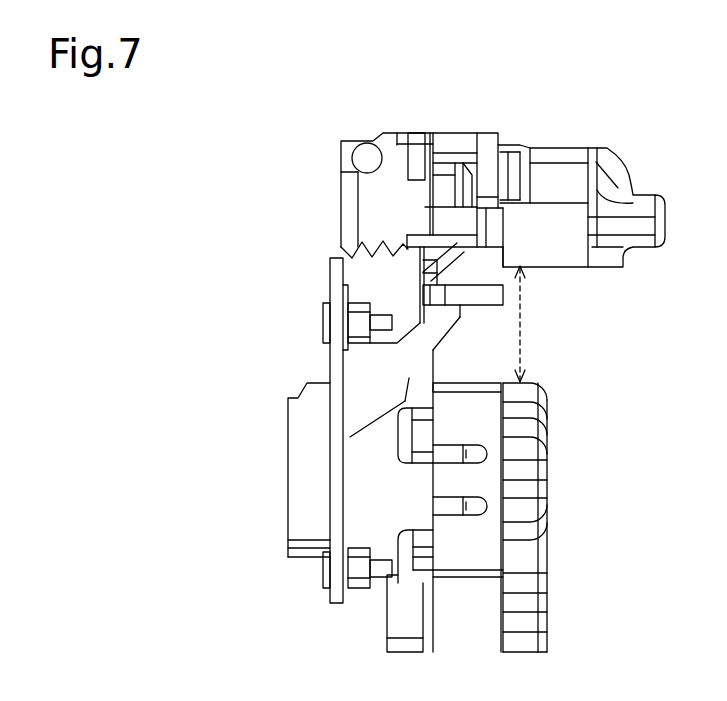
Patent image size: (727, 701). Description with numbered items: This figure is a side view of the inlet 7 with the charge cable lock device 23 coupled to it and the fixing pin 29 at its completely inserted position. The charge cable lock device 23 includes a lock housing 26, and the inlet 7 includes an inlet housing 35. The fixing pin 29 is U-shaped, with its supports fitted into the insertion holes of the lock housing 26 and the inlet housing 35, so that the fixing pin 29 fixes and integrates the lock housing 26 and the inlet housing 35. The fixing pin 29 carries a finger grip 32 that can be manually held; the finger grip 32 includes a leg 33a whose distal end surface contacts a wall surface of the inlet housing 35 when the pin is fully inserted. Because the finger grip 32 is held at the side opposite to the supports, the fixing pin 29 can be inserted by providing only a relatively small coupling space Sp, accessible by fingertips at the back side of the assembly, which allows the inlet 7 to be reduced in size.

The charge cable lock device 23 is at (343, 101).
The lock housing 26 is at (396, 138).
The finger grip 32 is at (498, 293).
The fixing pin 29 is at (497, 304).
The leg 33a is at (473, 298).
The coupling space Sp is at (523, 322).
The inlet 7 is at (287, 420).
The inlet housing 35 is at (353, 513).